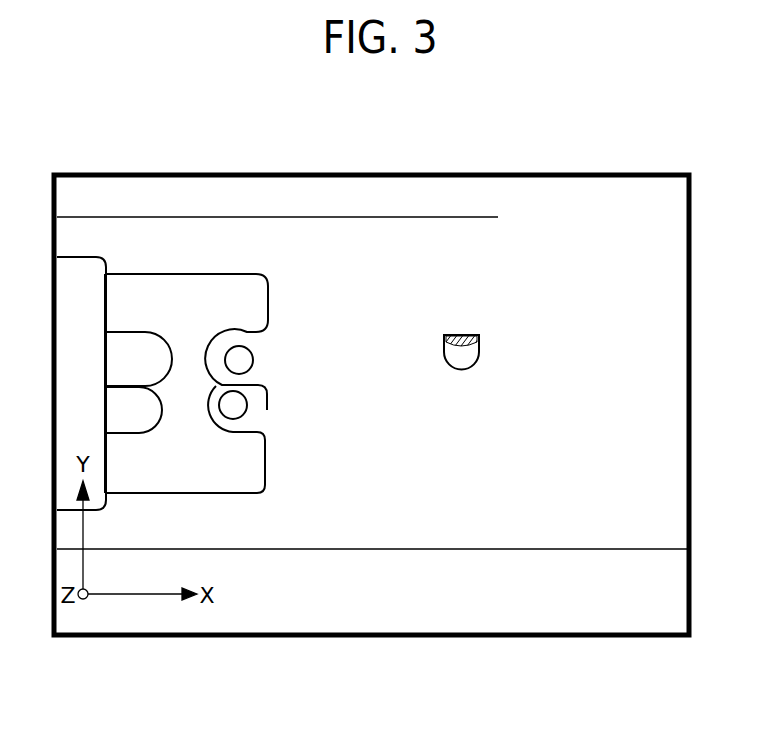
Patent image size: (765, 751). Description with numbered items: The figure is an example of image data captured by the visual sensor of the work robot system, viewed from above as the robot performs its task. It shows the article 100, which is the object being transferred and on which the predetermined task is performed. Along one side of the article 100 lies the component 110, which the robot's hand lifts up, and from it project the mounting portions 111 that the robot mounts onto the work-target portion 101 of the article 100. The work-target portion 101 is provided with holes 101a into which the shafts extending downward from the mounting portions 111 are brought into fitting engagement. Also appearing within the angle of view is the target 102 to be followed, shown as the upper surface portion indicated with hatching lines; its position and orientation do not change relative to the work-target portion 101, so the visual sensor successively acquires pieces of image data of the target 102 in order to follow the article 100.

The article 100 is at (420, 549).
The component 110 is at (73, 257).
The mounting portions 111 is at (133, 332).
The work-target portion 101 is at (240, 332).
The holes 101a is at (239, 360).
The target to be followed 102 is at (461, 333).